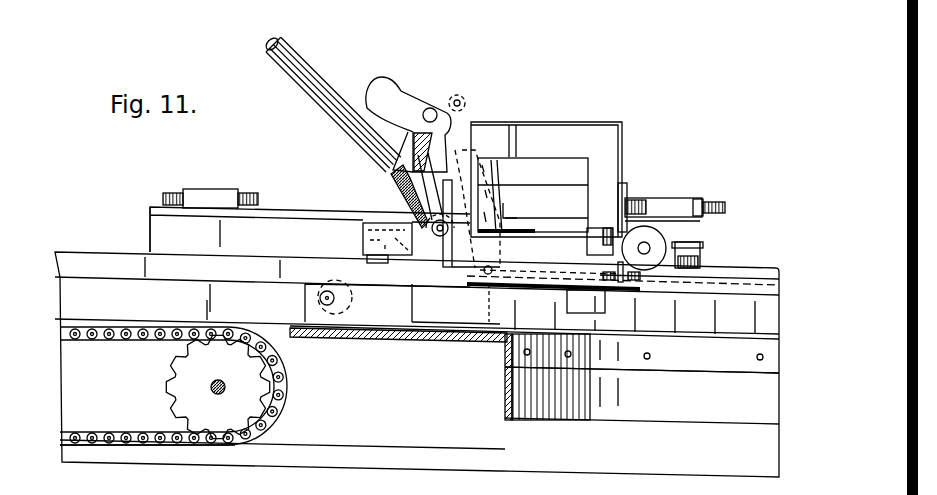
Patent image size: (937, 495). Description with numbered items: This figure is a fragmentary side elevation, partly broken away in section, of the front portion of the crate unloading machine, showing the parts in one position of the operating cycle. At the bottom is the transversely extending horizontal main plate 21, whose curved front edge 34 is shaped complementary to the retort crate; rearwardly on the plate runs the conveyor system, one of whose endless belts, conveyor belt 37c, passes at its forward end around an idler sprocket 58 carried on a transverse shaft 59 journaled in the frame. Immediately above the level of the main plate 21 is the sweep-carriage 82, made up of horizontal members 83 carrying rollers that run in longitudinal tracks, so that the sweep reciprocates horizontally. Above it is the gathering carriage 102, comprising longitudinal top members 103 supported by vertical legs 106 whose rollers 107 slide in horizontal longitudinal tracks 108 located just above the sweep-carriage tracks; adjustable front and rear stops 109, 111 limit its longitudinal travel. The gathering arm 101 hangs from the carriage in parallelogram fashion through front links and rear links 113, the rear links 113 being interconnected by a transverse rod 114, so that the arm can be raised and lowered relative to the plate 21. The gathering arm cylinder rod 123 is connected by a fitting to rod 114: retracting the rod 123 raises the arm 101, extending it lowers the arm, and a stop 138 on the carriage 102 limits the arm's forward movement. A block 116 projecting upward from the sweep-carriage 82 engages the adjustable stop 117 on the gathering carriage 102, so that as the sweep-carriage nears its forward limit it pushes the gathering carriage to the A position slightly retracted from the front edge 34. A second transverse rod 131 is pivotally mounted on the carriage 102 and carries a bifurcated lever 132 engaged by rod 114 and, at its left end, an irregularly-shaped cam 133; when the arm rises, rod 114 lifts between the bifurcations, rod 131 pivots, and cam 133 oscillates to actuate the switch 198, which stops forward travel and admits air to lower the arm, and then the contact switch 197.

The main plate 21 is at (480, 337).
The front edge 34 is at (680, 356).
The conveyor belt 37c is at (150, 440).
The idler sprocket 58 is at (277, 387).
The transverse shaft 59 is at (226, 388).
The sweep-carriage 82 is at (392, 304).
The horizontal member 83 is at (437, 308).
The gathering arm 101 is at (534, 275).
The gathering carriage 102 is at (602, 117).
The longitudinal top member 103 is at (540, 135).
The vertical leg 106 is at (613, 147).
The roller 107 is at (363, 236).
The track 108 is at (255, 216).
The front stop 109 is at (714, 205).
The rear stop 111 is at (224, 190).
The rear link 113 is at (503, 206).
The transverse rod 114 is at (471, 212).
The block 116 is at (572, 300).
The adjustable stop 117 is at (617, 284).
The rod 123 is at (318, 82).
The second transverse rod 131 is at (433, 108).
The bifurcated lever 132 is at (418, 175).
The cam 133 is at (398, 88).
The stop 138 is at (503, 188).
The contact switch 197 is at (387, 180).
The switch 198 is at (465, 102).